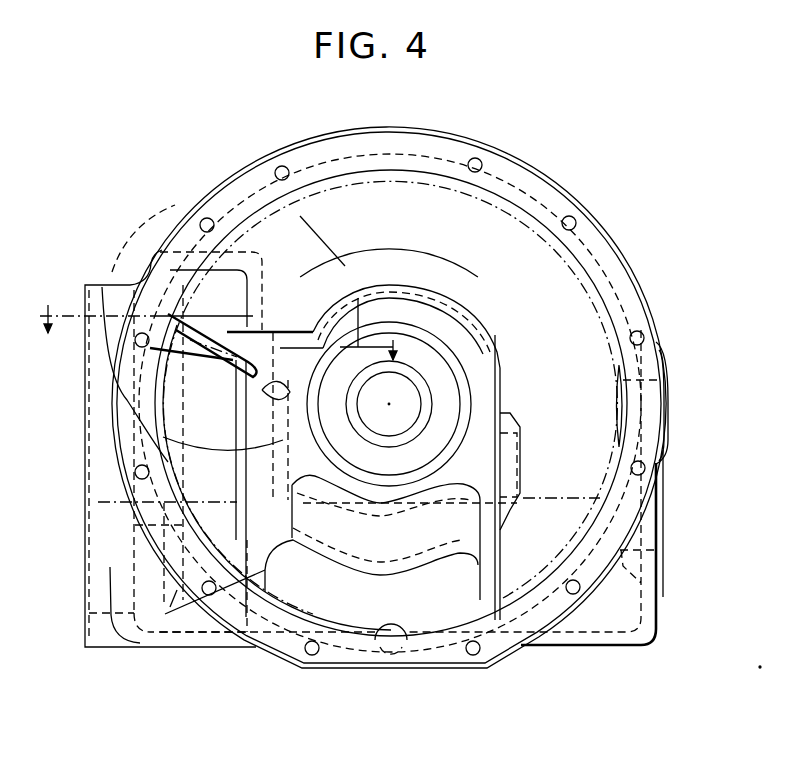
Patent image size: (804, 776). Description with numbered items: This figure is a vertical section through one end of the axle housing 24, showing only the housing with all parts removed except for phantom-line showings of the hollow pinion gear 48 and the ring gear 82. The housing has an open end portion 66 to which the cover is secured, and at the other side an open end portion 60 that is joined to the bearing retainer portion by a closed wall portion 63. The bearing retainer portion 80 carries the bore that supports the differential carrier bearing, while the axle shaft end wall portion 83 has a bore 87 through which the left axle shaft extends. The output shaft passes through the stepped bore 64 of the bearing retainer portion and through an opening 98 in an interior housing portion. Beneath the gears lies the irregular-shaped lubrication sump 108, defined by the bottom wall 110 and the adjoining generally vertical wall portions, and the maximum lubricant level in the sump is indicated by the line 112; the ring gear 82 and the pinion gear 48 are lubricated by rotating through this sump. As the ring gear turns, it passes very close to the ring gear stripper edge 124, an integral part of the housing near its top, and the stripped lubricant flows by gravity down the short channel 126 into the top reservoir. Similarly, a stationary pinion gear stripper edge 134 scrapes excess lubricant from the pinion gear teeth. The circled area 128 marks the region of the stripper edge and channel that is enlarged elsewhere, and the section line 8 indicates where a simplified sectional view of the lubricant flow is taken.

The axle housing 24 is at (246, 152).
The open end portion 66 is at (440, 150).
The ring gear 82 is at (538, 199).
The circled area 128 is at (172, 206).
The closed wall portion 63 is at (97, 283).
The open end portion 60 is at (83, 357).
The section line 8— 8 is at (219, 329).
The ring gear stripper edge 124 is at (202, 315).
The channel 126 is at (268, 308).
The pinion gear stripper edge 134 is at (198, 490).
The bearing retainer portion 80 is at (466, 352).
The axle shaft end wall portion 83 is at (448, 395).
The bore 87 is at (413, 378).
The stepped bore 64 is at (312, 447).
The opening 98 is at (538, 455).
The line 112 is at (99, 505).
The lubrication sump 108 is at (356, 600).
The hollow pinion gear 48 is at (166, 622).
The bottom wall 110 is at (190, 633).